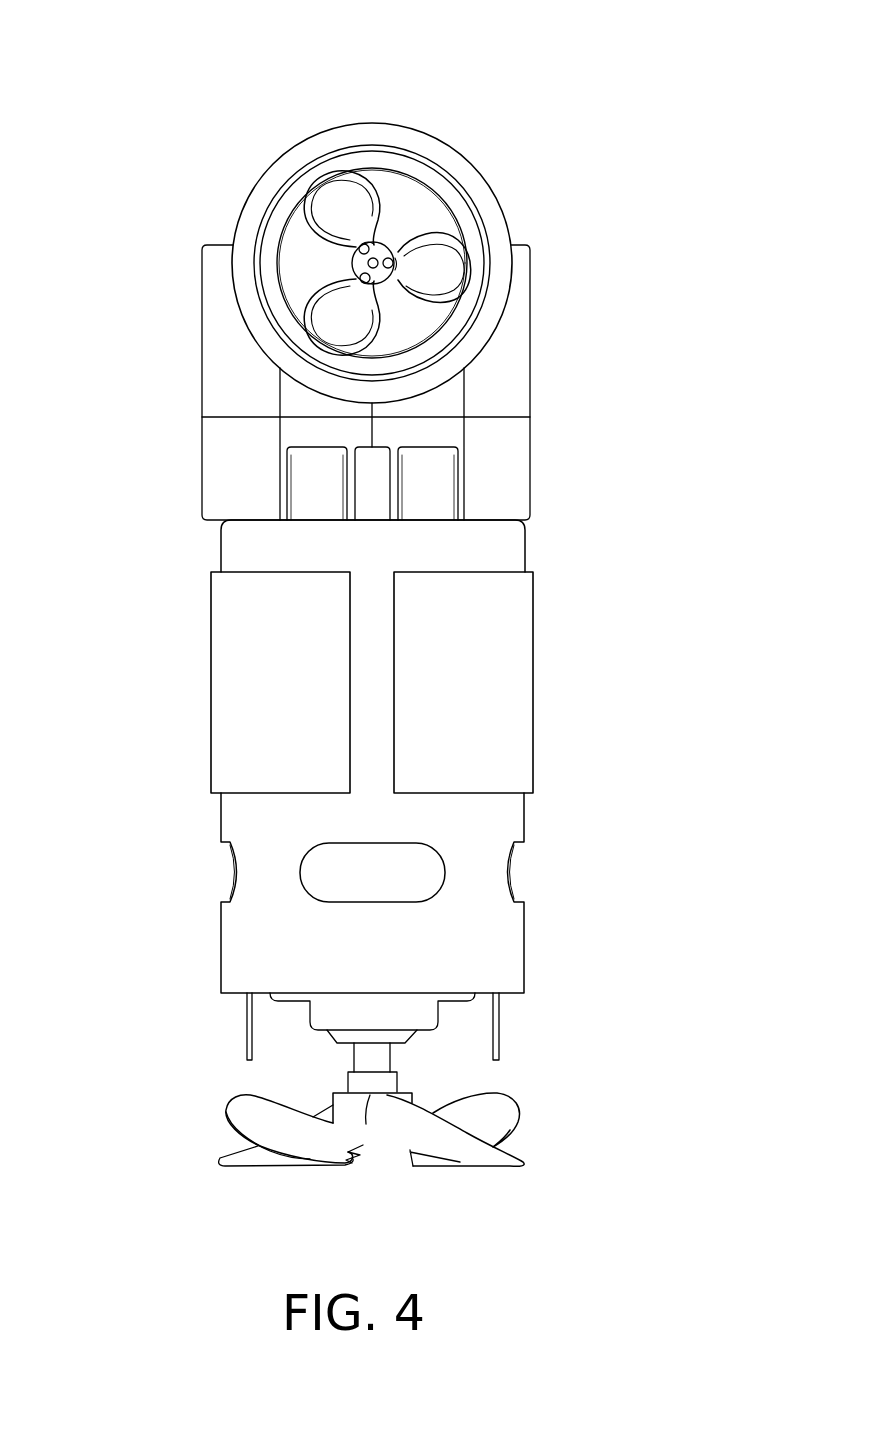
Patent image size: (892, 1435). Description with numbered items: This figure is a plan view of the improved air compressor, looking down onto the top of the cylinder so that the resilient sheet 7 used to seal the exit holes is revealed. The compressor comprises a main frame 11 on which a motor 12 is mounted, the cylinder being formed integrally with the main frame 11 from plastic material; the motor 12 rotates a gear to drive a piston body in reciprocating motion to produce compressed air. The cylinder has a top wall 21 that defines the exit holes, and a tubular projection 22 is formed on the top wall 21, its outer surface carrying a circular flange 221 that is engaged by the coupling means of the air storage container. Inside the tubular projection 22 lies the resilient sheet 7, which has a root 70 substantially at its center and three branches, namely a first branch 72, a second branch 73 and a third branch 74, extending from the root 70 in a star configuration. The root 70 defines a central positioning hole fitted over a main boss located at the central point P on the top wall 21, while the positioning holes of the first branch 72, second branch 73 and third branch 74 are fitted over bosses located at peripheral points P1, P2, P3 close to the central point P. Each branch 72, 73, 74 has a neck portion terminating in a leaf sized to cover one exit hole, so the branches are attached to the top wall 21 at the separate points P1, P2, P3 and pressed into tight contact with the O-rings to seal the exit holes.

The main frame 11 is at (250, 470).
The motor 12 is at (243, 837).
The top wall 21 is at (308, 257).
The tubular projection 22 is at (283, 217).
The circular flange 221 is at (483, 193).
The resilient sheet 7 is at (372, 224).
The root 70 is at (394, 287).
The first branch 72 is at (347, 220).
The second branch 73 is at (352, 310).
The third branch 74 is at (423, 268).
The central point P is at (378, 258).
The peripheral point P1 is at (368, 245).
The peripheral point P2 is at (369, 282).
The peripheral point P3 is at (391, 267).